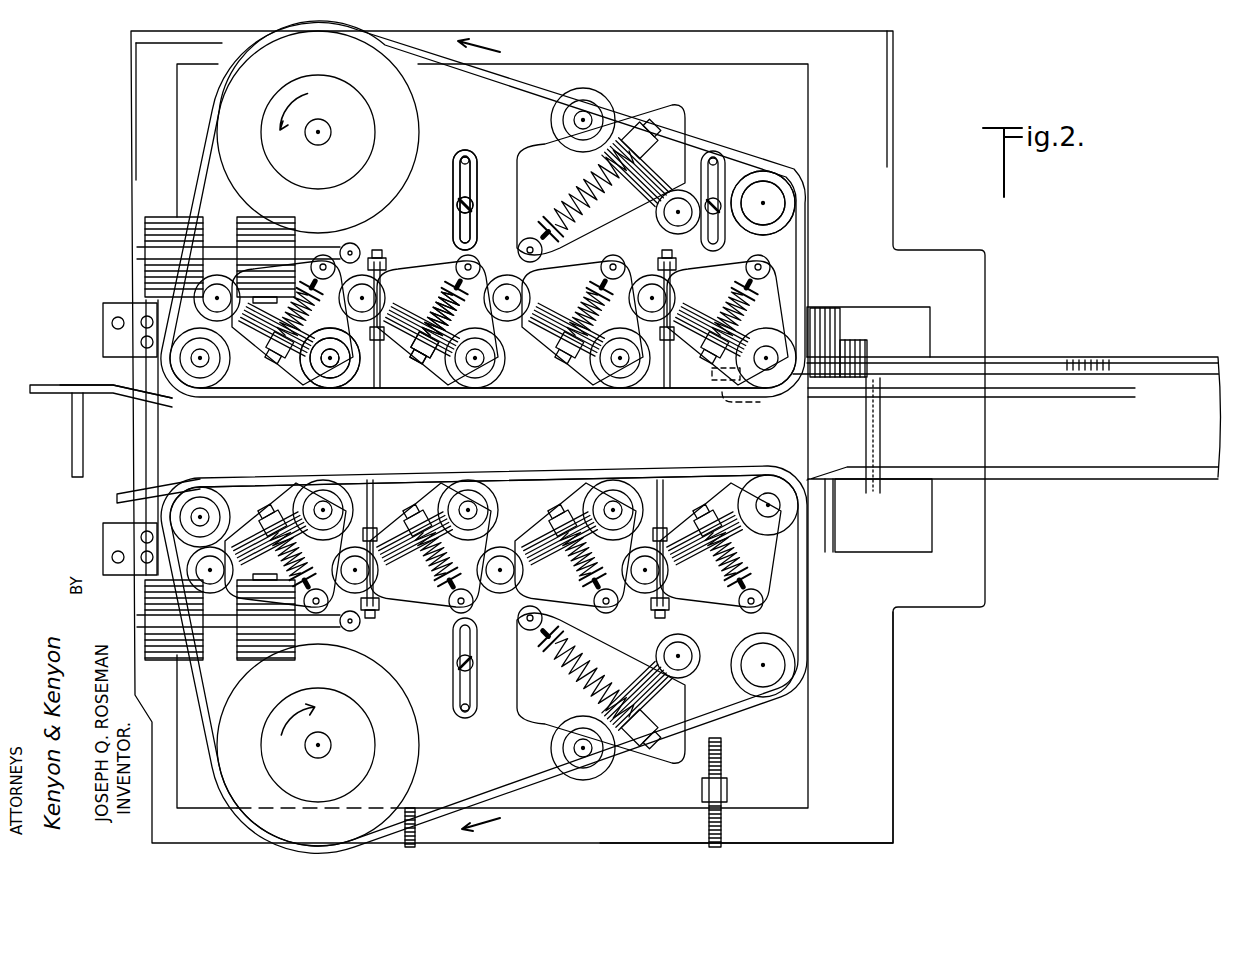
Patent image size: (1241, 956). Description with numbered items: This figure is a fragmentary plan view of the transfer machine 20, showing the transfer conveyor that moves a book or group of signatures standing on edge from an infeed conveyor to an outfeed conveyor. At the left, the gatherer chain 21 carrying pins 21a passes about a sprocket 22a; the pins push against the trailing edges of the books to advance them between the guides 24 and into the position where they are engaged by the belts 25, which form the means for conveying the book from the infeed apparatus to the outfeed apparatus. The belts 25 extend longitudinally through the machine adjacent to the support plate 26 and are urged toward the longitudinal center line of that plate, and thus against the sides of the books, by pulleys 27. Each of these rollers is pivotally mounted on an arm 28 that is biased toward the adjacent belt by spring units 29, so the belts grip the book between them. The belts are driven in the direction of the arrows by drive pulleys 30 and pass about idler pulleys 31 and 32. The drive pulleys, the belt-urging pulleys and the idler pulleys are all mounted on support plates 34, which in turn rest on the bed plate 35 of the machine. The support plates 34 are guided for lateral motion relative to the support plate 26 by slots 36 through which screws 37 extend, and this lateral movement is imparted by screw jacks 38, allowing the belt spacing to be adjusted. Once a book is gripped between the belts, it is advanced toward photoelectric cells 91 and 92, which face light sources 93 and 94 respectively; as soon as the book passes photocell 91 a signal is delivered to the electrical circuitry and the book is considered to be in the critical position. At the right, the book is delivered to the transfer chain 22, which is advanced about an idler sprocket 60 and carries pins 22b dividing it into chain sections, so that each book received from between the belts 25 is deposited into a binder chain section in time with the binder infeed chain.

The transfer machine 20 is at (877, 207).
The gatherer chain 21 is at (42, 384).
The pins 21a is at (72, 455).
The transfer chain 22 is at (1047, 370).
The sprocket 22a is at (90, 384).
The pins 22b is at (882, 432).
The guides 24 is at (118, 498).
The belts 25 is at (305, 395).
The support plate 26 is at (268, 457).
The pulleys 27 is at (215, 382).
The arm 28 is at (402, 336).
The spring units 29 is at (447, 306).
The drive pulleys 30 is at (410, 121).
The idler pulleys 31 is at (775, 174).
The idler pulleys 32 is at (213, 382).
The support plates 34 is at (797, 104).
The bed plate 35 is at (875, 702).
The slots 36 is at (471, 163).
The screws 37 is at (477, 213).
The screw jacks 38 is at (418, 810).
The idler sprocket 60 is at (723, 393).
The photoelectric cell 91 is at (160, 661).
The photoelectric cell 92 is at (245, 655).
The light source 93 is at (143, 240).
The light source 94 is at (297, 226).